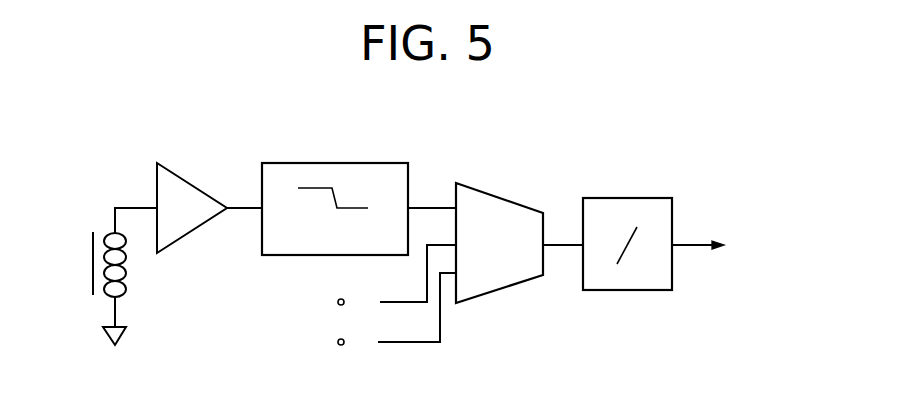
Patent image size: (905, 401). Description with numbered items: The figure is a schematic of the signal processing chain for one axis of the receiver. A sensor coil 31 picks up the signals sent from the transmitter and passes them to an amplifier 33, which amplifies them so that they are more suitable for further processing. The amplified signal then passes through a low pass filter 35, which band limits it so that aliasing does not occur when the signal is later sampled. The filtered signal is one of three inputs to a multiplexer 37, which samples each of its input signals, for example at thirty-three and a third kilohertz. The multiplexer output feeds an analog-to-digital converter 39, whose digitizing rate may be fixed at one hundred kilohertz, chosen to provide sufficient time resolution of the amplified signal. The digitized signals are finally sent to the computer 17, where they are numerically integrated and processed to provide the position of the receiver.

The sensor coil 31 is at (93, 250).
The amplifier 33 is at (214, 196).
The low pass filter 35 is at (300, 163).
The multiplexer 37 is at (482, 192).
The analog-to-digital converter 39 is at (625, 198).
The computer 17 is at (744, 234).